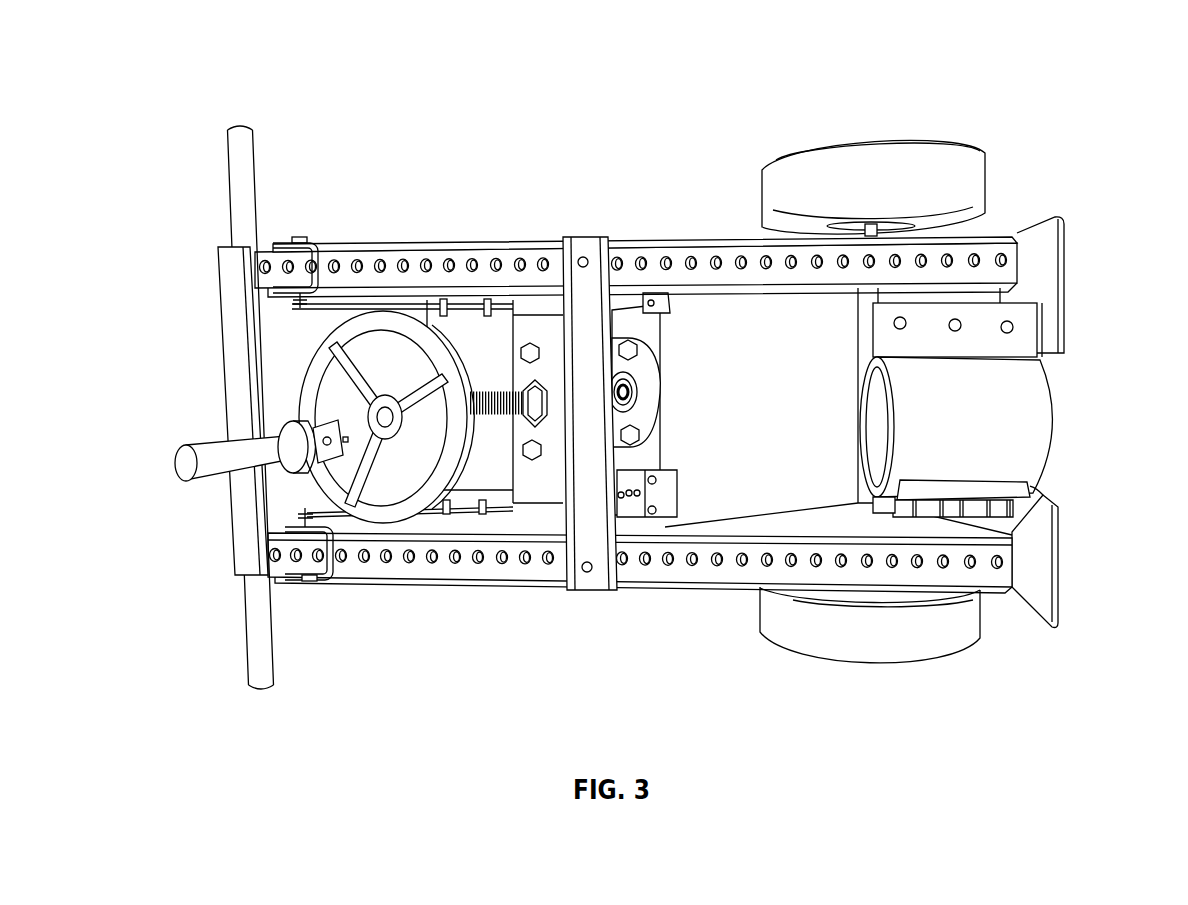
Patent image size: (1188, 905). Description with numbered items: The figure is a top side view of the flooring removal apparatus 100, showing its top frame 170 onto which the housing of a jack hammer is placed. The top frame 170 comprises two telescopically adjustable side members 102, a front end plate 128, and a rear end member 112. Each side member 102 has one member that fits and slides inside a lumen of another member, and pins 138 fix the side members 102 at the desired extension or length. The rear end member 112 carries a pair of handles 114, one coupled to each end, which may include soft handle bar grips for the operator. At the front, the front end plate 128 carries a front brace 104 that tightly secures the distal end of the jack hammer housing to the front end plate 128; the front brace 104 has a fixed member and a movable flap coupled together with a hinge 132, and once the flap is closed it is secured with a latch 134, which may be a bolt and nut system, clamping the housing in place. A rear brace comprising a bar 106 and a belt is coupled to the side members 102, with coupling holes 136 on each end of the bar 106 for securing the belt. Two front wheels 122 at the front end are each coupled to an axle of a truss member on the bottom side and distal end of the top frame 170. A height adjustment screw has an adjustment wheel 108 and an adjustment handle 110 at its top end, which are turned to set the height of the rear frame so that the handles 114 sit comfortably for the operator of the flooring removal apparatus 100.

The flooring removal apparatus 100 is at (1095, 82).
The side members 102 is at (718, 248).
The front brace 104 is at (1057, 422).
The bar 106 is at (583, 425).
The adjustment wheel 108 is at (428, 327).
The adjustment handle 110 is at (207, 442).
The rear end member 112 is at (240, 347).
The handles 114 is at (228, 190).
The front wheels 122 is at (850, 140).
The front end plate 128 is at (1060, 300).
The hinge 132 is at (1020, 512).
The latch 134 is at (893, 323).
The coupling holes 136 is at (583, 253).
The pins 138 is at (312, 237).
The top frame 170 is at (405, 582).